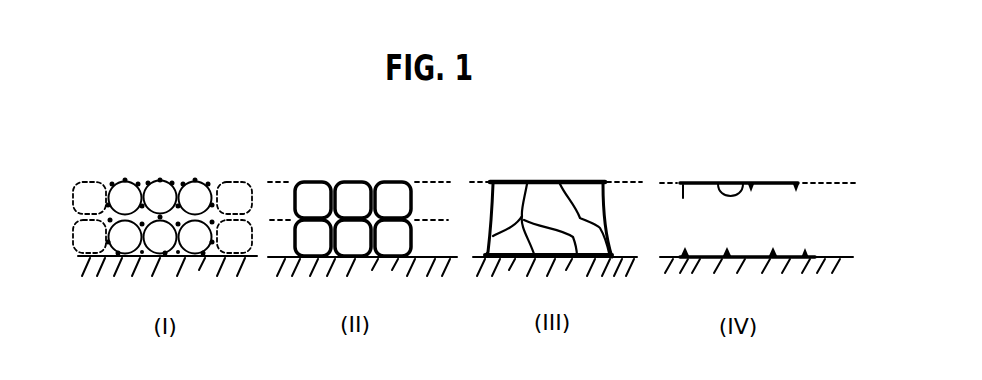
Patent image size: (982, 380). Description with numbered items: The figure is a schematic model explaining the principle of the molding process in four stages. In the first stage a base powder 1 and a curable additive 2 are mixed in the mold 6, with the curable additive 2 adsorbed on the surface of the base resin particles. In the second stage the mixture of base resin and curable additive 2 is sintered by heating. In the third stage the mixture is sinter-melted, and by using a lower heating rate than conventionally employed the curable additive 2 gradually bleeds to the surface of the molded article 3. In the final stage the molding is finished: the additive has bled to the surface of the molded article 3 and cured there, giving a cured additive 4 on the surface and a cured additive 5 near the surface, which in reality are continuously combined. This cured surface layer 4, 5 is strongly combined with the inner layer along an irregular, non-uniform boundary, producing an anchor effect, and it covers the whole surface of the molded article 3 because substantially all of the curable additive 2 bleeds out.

The base powder 1 is at (128, 236).
The curable additive 2 is at (168, 185).
The molded article 3 is at (505, 205).
The cured additive on the surface 4 is at (700, 182).
The cured additive near the surface 5 is at (748, 190).
The mold 6 is at (465, 275).